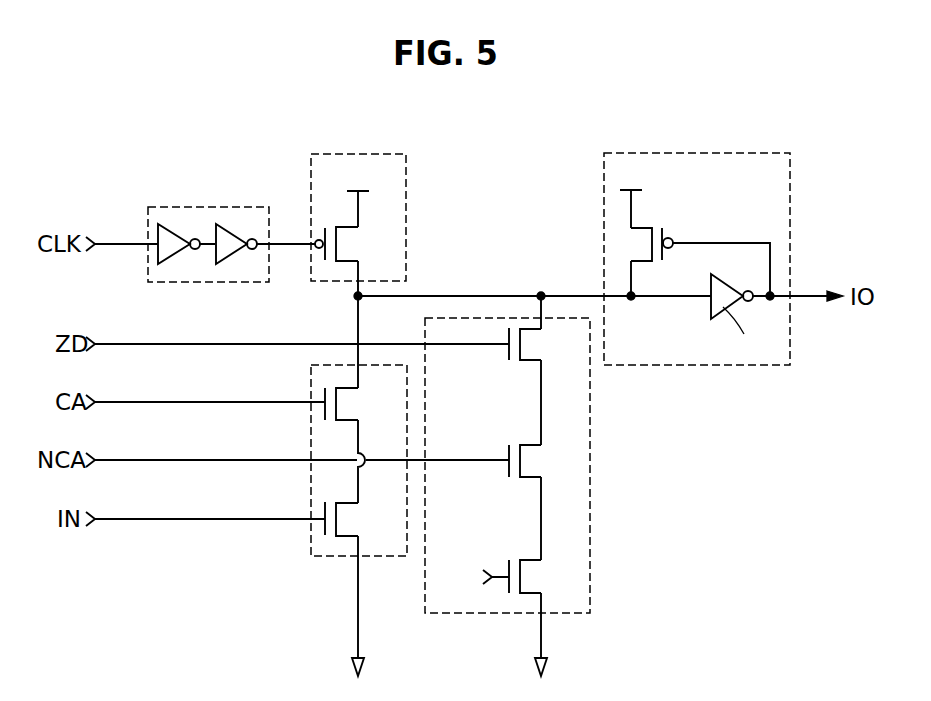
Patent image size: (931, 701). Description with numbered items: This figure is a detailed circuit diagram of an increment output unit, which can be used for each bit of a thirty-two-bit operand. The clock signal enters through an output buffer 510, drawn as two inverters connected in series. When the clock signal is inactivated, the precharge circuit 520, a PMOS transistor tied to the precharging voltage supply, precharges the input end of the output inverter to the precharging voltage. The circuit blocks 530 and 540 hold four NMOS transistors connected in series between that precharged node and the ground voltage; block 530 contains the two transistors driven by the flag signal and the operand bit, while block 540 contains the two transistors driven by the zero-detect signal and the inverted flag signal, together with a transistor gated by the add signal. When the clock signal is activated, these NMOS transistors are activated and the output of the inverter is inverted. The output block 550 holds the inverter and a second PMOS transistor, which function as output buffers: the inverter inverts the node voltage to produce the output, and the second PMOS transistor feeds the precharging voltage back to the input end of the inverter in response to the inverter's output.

The output buffer 510 is at (210, 207).
The precharge unit (PMOS transistor P51) 520 is at (362, 154).
The input evaluation unit (NMOS transistors N51, N52) 530 is at (310, 383).
The discharge unit (NMOS transistors N53, N54, ADD transistor) 540 is at (590, 530).
The latch/output unit (PMOS P52 and inverter INV51) 550 is at (732, 153).